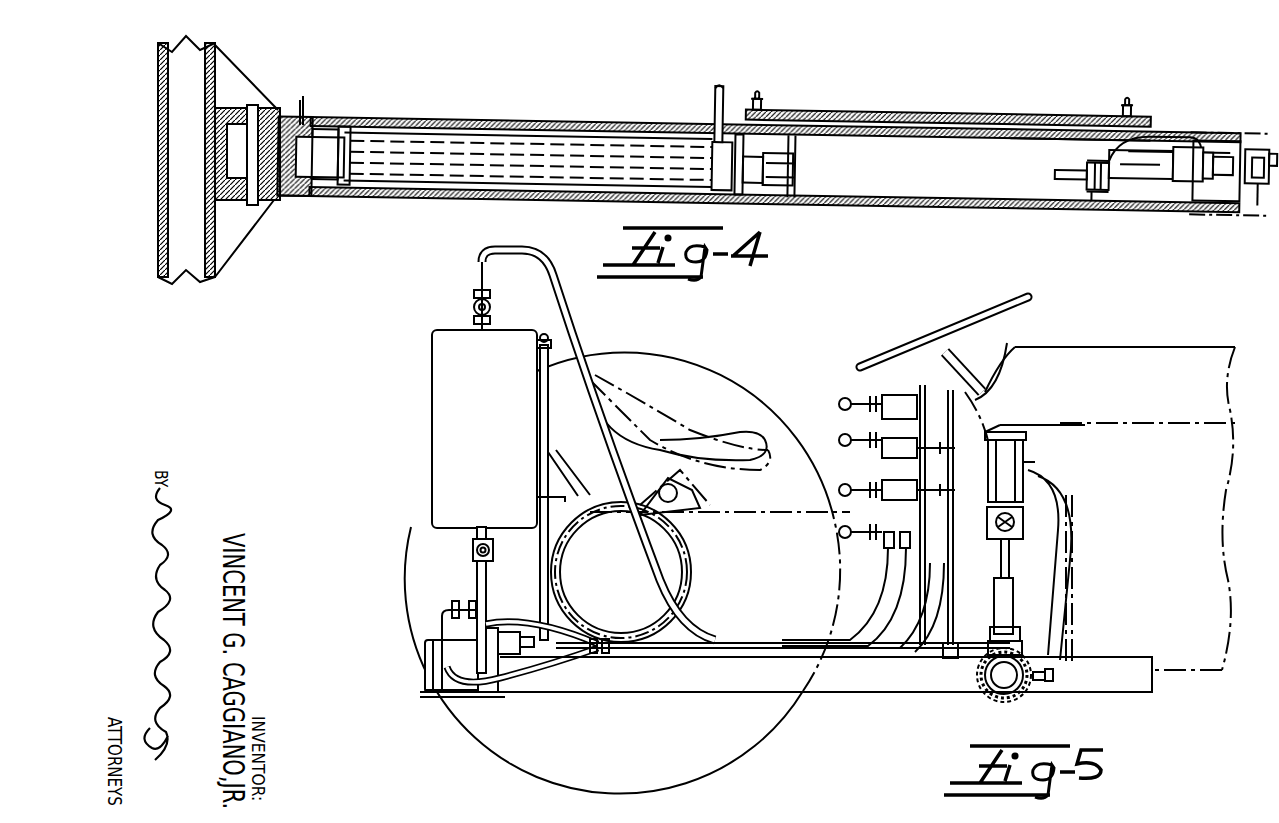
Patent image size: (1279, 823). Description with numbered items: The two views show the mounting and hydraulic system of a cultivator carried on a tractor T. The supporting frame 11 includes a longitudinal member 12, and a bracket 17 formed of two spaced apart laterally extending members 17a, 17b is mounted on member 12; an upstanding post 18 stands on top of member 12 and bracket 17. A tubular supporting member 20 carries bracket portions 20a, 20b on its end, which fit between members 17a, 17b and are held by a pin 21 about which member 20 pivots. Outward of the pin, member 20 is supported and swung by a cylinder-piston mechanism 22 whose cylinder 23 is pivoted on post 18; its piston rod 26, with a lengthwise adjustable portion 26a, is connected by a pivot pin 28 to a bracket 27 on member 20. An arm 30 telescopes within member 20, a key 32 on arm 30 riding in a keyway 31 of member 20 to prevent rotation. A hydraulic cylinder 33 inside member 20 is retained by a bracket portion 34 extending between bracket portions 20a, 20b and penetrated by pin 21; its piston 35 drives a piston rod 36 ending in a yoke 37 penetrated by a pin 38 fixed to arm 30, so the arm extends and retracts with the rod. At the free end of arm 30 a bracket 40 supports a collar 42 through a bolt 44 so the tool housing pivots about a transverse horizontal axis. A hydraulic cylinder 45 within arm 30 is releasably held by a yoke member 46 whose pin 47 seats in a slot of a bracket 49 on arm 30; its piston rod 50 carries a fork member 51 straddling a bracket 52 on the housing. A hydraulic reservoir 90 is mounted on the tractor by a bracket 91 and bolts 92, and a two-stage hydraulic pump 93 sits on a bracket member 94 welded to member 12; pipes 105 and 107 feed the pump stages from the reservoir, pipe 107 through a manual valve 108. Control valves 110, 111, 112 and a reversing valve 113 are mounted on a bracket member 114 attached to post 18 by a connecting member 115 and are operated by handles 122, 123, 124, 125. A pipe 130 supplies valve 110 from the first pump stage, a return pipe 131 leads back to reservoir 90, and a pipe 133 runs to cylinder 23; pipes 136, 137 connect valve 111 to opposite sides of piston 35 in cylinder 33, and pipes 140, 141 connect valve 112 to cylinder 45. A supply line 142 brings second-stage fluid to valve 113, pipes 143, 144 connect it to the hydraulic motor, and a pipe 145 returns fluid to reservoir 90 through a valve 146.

In FIG. 4, the supporting frame 11 is at (155, 235).
In FIG. 5, the supporting frame 11 is at (718, 697).
In FIG. 4, the longitudinal member 12 is at (158, 131).
In FIG. 5, the longitudinal member 12 is at (660, 684).
In FIG. 4, the bracket 17 is at (240, 240).
In FIG. 4, the laterally extending member 17a is at (276, 108).
In FIG. 4, the laterally extending member 17b is at (275, 203).
In FIG. 5, the upstanding post 18 is at (1060, 433).
In FIG. 4, the supporting member 20 is at (448, 200).
In FIG. 5, the supporting member 20 is at (990, 694).
In FIG. 4, the bracket portion 20a is at (300, 122).
In FIG. 4, the bracket portion 20b is at (300, 198).
In FIG. 4, the pin 21 is at (254, 205).
In FIG. 5, the cylinder-piston mechanism 22 is at (1036, 462).
In FIG. 5, the cylinder 23 is at (1024, 482).
In FIG. 5, the piston rod 26 is at (1010, 556).
In FIG. 5, the adjustable portion 26a is at (1013, 590).
In FIG. 5, the bracket 27 is at (1022, 652).
In FIG. 5, the pivot pin 28 is at (1020, 634).
In FIG. 4, the arm 30 is at (901, 181).
In FIG. 5, the arm 30 is at (998, 702).
In FIG. 4, the keyway 31 is at (933, 114).
In FIG. 5, the keyway 31 is at (1044, 698).
In FIG. 4, the key 32 is at (1013, 118).
In FIG. 5, the key 32 is at (1030, 696).
In FIG. 4, the hydraulic cylinder 33 is at (530, 195).
In FIG. 4, the bracket portion 34 is at (236, 155).
In FIG. 4, the piston 35 is at (342, 126).
In FIG. 4, the piston rod 36 is at (607, 142).
In FIG. 4, the yoke 37 is at (753, 196).
In FIG. 4, the pin 38 is at (793, 158).
In FIG. 4, the bracket 40 is at (1227, 140).
In FIG. 4, the collar 42 is at (1257, 150).
In FIG. 4, the bolt 44 is at (1238, 132).
In FIG. 4, the hydraulic cylinder 45 is at (1133, 180).
In FIG. 4, the yoke member 46 is at (1086, 170).
In FIG. 4, the pin 47 is at (1094, 194).
In FIG. 4, the bracket 49 is at (1058, 175).
In FIG. 4, the piston rod 50 is at (1208, 184).
In FIG. 4, the fork member 51 is at (1257, 198).
In FIG. 4, the bracket 52 is at (1258, 180).
In FIG. 5, the hydraulic reservoir 90 is at (495, 378).
In FIG. 5, the bracket 91 is at (566, 490).
In FIG. 5, the bolts 92 is at (536, 497).
In FIG. 5, the two-stage hydraulic pump 93 is at (423, 675).
In FIG. 5, the bracket member 94 is at (514, 654).
In FIG. 5, the pipe 105 is at (440, 626).
In FIG. 5, the pipe 107 is at (477, 582).
In FIG. 5, the valve 108 is at (473, 550).
In FIG. 5, the control valve 110 is at (900, 395).
In FIG. 5, the control valve 111 is at (886, 438).
In FIG. 5, the control valve 112 is at (886, 480).
In FIG. 5, the reversing valve 113 is at (884, 547).
In FIG. 5, the bracket member 114 is at (934, 398).
In FIG. 5, the connecting member 115 is at (985, 430).
In FIG. 5, the handle 122 is at (840, 398).
In FIG. 5, the handle 123 is at (840, 436).
In FIG. 5, the handle 124 is at (838, 488).
In FIG. 5, the handle 125 is at (838, 532).
In FIG. 5, the pipe 130 is at (554, 662).
In FIG. 5, the hydraulic return pipe 131 is at (540, 411).
In FIG. 5, the pipe 133 is at (1048, 488).
In FIG. 4, the pipe 136 is at (721, 92).
In FIG. 5, the pipe 136 is at (1075, 582).
In FIG. 4, the pipe 137 is at (302, 96).
In FIG. 5, the pipe 137 is at (1070, 562).
In FIG. 4, the pipe 140 is at (1178, 150).
In FIG. 4, the pipe 141 is at (1168, 138).
In FIG. 5, the supply line 142 is at (572, 637).
In FIG. 5, the pipe 143 is at (982, 684).
In FIG. 5, the pipe 144 is at (978, 670).
In FIG. 5, the pipe 145 is at (564, 318).
In FIG. 5, the valve 146 is at (474, 308).
In FIG. 5, the tractor T is at (1118, 340).